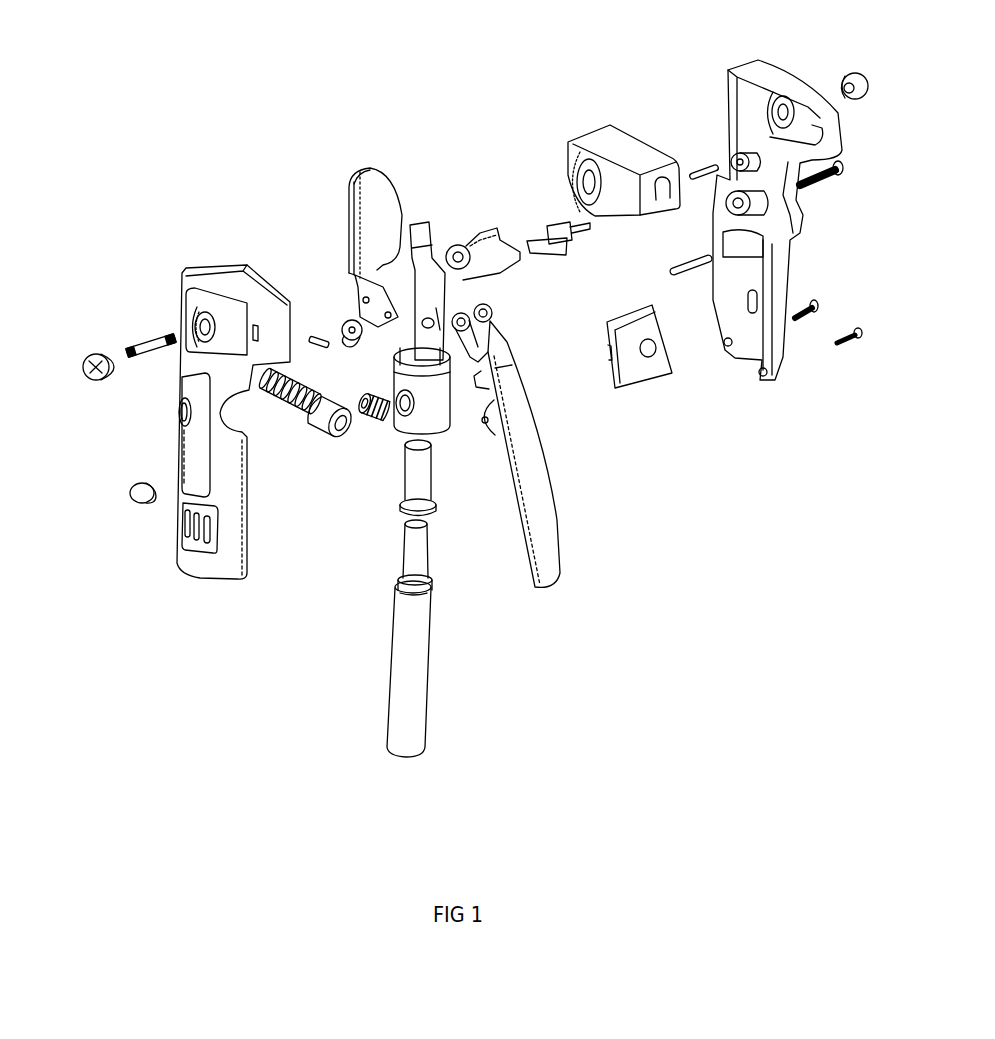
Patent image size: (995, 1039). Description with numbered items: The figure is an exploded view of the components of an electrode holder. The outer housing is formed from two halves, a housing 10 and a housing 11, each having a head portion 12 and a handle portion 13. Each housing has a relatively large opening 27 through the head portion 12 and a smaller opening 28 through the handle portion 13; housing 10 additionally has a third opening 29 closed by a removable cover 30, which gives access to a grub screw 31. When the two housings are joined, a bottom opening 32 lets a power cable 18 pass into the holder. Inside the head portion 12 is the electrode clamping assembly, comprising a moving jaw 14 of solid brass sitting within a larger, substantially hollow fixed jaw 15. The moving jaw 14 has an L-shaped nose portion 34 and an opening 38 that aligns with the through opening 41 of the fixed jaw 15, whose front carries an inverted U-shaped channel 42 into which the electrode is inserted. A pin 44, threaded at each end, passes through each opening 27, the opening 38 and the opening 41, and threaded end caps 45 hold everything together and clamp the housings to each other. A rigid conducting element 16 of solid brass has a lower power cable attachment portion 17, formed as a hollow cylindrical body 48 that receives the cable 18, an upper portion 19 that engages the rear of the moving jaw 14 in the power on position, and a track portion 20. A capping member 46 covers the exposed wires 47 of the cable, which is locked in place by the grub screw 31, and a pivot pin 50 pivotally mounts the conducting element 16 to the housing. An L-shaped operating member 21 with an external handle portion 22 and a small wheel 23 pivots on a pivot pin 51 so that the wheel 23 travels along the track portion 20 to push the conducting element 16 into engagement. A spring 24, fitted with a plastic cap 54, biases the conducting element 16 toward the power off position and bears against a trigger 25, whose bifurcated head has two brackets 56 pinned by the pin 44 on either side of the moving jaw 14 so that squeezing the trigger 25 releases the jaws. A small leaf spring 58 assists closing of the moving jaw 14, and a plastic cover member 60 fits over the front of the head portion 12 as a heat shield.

The outer housing 10 is at (68, 233).
The outer housing 11 is at (804, 40).
The head portion 12 is at (207, 260).
The handle portion 13 is at (98, 432).
The moving jaw 14 is at (470, 196).
The fixed jaw 15 is at (546, 92).
The rigid conducting element 16 is at (392, 337).
The power cable attachment portion 17 is at (441, 439).
The power cable 18 is at (409, 640).
The upper portion 19 is at (417, 216).
The track portion 20 is at (422, 306).
The operating member 21 is at (299, 177).
The handle portion 22 is at (344, 235).
The wheel 23 is at (337, 317).
The spring 24 is at (282, 404).
The trigger 25 is at (578, 508).
The opening 27 is at (192, 322).
The opening 28 is at (181, 405).
The opening 29 is at (191, 484).
The cover 30 is at (129, 492).
The grub screw 31 is at (376, 424).
The bottom opening 32 is at (745, 356).
The nose portion 34 is at (516, 271).
The opening 38 is at (452, 242).
The through opening 41 is at (576, 161).
The U-shaped channel 42 is at (662, 194).
The pin 44 is at (142, 346).
The threaded end caps 45 is at (86, 346).
The capping member 46 is at (397, 479).
The exposed wires 47 is at (389, 554).
The hollow cylindrical body 48 is at (421, 383).
The pivot pin 50 is at (683, 272).
The pivot pin 51 is at (699, 154).
The plastic cap 54 is at (316, 431).
The brackets 56 is at (469, 325).
The leaf spring 58 is at (544, 216).
The cover member 60 is at (646, 376).